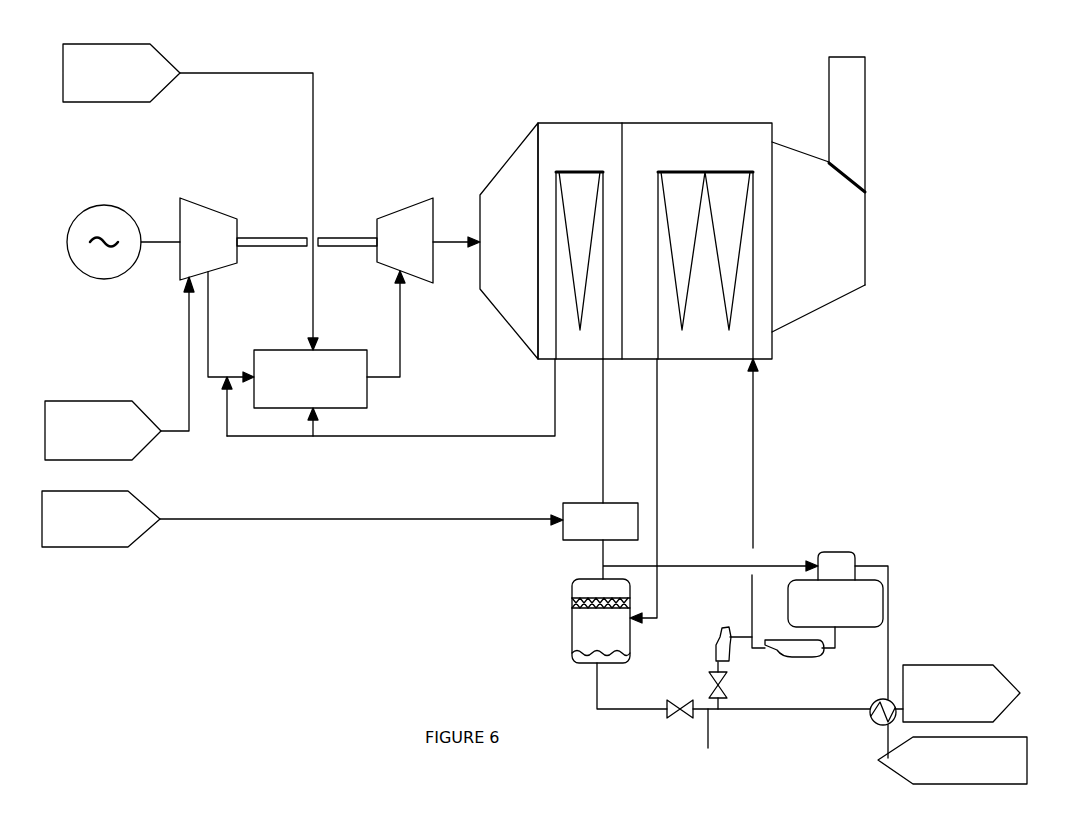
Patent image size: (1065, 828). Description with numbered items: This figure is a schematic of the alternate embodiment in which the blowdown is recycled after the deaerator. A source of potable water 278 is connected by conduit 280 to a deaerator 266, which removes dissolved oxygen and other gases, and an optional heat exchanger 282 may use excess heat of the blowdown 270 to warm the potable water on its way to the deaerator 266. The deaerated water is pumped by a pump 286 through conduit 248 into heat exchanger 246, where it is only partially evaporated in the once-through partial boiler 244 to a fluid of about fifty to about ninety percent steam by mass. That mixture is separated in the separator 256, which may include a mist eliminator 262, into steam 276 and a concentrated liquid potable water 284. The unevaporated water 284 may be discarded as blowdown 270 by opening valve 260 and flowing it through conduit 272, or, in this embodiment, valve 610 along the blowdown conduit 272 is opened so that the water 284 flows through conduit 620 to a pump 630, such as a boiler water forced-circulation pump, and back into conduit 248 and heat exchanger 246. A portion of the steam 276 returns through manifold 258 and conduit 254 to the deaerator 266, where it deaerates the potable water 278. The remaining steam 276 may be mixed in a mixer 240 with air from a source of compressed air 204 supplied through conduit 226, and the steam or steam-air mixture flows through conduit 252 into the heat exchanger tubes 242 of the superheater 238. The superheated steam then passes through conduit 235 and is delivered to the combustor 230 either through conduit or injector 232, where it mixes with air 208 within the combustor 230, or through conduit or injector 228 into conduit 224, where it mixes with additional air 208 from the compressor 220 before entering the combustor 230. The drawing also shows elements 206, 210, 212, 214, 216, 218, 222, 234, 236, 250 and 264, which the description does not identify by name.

The source of compressed air 204 is at (107, 550).
The air inlet line 206 is at (180, 375).
The air 208 is at (97, 393).
The generator shaft 210 is at (153, 247).
The generator 212 is at (100, 200).
The fuel line 214 is at (320, 112).
The fuel source 216 is at (158, 45).
The turbine 218 is at (415, 197).
The compressor 220 is at (198, 195).
The shaft 222 is at (283, 232).
The conduit 224 is at (217, 320).
The conduit 226 is at (272, 532).
The conduit and/or injector 228 is at (223, 427).
The combustor 230 is at (330, 348).
The conduit and/or injector 232 is at (320, 428).
The combustor outlet line 234 is at (407, 342).
The conduit 235 is at (472, 447).
The turbine exhaust line 236 is at (462, 233).
The superheater 238 is at (565, 137).
The mixer 240 is at (570, 500).
The heat exchanger tubes 242 is at (570, 197).
The once-through partial boiler 244 is at (730, 357).
The heat exchanger 246 is at (668, 212).
The conduit 248 is at (763, 452).
The exhaust stack 250 is at (860, 118).
The conduit 252 is at (610, 482).
The conduit 254 is at (770, 553).
The separator 256 is at (568, 627).
The manifold 258 is at (587, 562).
The valve 260 is at (670, 705).
The mist eliminator 262 is at (572, 602).
The line from coil to drum 264 is at (667, 490).
The deaerator 266 is at (875, 617).
The blowdown 270 is at (963, 667).
The blowdown conduit 272 is at (747, 708).
The steam 276 is at (622, 643).
The source of potable water 278 is at (1010, 735).
The conduit 280 is at (890, 593).
The heat exchanger 282 is at (868, 715).
The unevaporated potable water 284 is at (583, 663).
The pump 286 is at (790, 645).
The valve 610 is at (708, 742).
The conduit 620 is at (717, 667).
The pump 630 is at (727, 628).